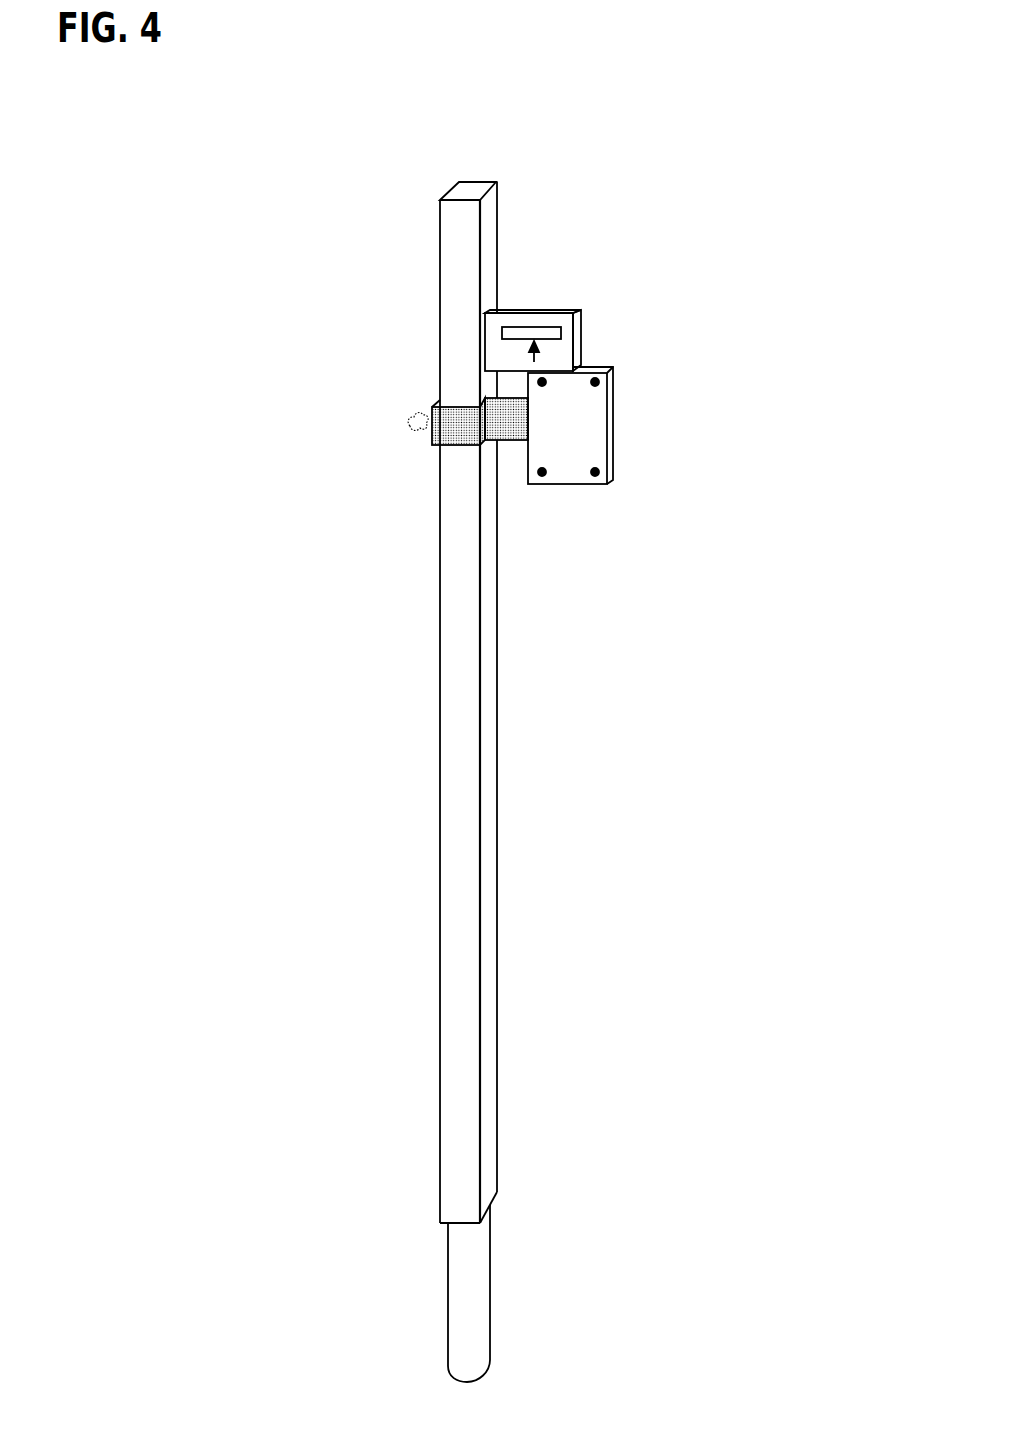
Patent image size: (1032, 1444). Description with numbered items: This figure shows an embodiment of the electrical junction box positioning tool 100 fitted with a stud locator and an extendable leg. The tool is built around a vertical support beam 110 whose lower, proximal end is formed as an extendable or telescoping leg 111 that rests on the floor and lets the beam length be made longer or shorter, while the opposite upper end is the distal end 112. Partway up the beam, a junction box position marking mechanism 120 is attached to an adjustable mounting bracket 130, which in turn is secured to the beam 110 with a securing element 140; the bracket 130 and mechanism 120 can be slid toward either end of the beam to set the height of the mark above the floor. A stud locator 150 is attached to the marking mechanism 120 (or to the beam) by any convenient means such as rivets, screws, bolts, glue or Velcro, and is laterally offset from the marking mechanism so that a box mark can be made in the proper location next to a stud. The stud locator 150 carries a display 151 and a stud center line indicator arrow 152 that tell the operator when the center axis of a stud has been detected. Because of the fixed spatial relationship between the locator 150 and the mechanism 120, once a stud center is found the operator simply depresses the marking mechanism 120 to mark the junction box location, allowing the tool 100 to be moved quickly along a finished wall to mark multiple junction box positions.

The electrical junction box positioning tool 100 is at (511, 692).
The support beam 110 is at (497, 680).
The extendable leg 111 is at (470, 1333).
The distal end 112 is at (477, 195).
The junction box position marking mechanism 120 is at (609, 472).
The adjustable mounting bracket 130 is at (441, 436).
The securing element 140 is at (407, 428).
The stud locator 150 is at (635, 265).
The display 151 is at (545, 327).
The stud center line indicator arrow 152 is at (540, 356).